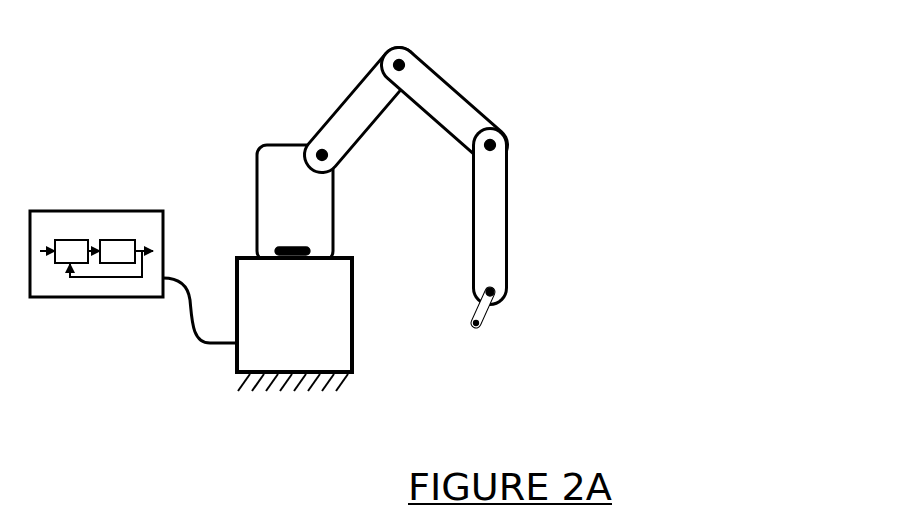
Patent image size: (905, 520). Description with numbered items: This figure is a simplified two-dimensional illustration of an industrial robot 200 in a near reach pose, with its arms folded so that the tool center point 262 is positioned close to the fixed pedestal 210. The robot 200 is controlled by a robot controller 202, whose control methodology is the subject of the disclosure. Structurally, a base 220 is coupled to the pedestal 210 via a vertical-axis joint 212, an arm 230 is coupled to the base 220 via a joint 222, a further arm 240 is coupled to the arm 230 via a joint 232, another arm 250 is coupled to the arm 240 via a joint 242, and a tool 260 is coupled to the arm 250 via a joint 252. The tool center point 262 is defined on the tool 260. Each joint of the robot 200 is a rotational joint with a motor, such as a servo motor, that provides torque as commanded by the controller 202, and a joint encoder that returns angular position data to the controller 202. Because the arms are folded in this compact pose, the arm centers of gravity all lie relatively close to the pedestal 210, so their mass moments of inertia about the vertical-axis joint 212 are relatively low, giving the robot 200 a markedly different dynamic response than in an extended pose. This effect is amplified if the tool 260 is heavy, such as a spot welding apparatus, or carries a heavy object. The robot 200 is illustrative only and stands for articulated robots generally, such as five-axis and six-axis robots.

The industrial robot 200 is at (745, 152).
The robot controller 202 is at (78, 211).
The fixed pedestal 210 is at (314, 337).
The vertical-axis joint 212 is at (293, 247).
The base 220 is at (256, 215).
The joint 222 is at (328, 158).
The arm 230 is at (341, 87).
The joint 232 is at (400, 53).
The arm 240 is at (455, 82).
The joint 242 is at (496, 146).
The arm 250 is at (512, 268).
The joint 252 is at (468, 295).
The tool 260 is at (487, 320).
The tool center point 262 is at (477, 328).